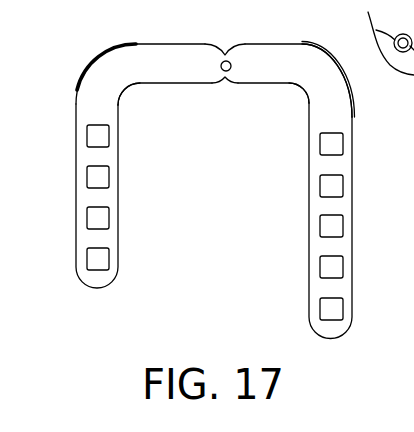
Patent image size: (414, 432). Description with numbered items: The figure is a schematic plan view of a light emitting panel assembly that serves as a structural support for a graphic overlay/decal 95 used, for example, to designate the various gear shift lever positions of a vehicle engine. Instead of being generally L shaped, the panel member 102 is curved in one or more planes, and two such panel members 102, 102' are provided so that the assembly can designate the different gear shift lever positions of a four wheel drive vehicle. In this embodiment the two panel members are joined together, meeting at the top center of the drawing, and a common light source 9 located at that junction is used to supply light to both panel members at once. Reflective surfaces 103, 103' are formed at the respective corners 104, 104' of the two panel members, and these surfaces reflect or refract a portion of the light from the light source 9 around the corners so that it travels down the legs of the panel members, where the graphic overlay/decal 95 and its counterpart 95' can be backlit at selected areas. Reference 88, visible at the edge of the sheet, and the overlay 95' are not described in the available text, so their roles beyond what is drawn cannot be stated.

The light source 9 is at (221, 65).
The adjacent figure element 88 is at (376, 30).
The graphic overlay/decal 95 is at (356, 221).
The left arm of bracket 95' is at (81, 170).
The panel member 102 is at (360, 226).
The panel member 102' is at (75, 197).
The reflective surface 103 is at (318, 63).
The reflective surface 103' is at (103, 50).
The corner 104 is at (287, 105).
The corner 104' is at (144, 92).